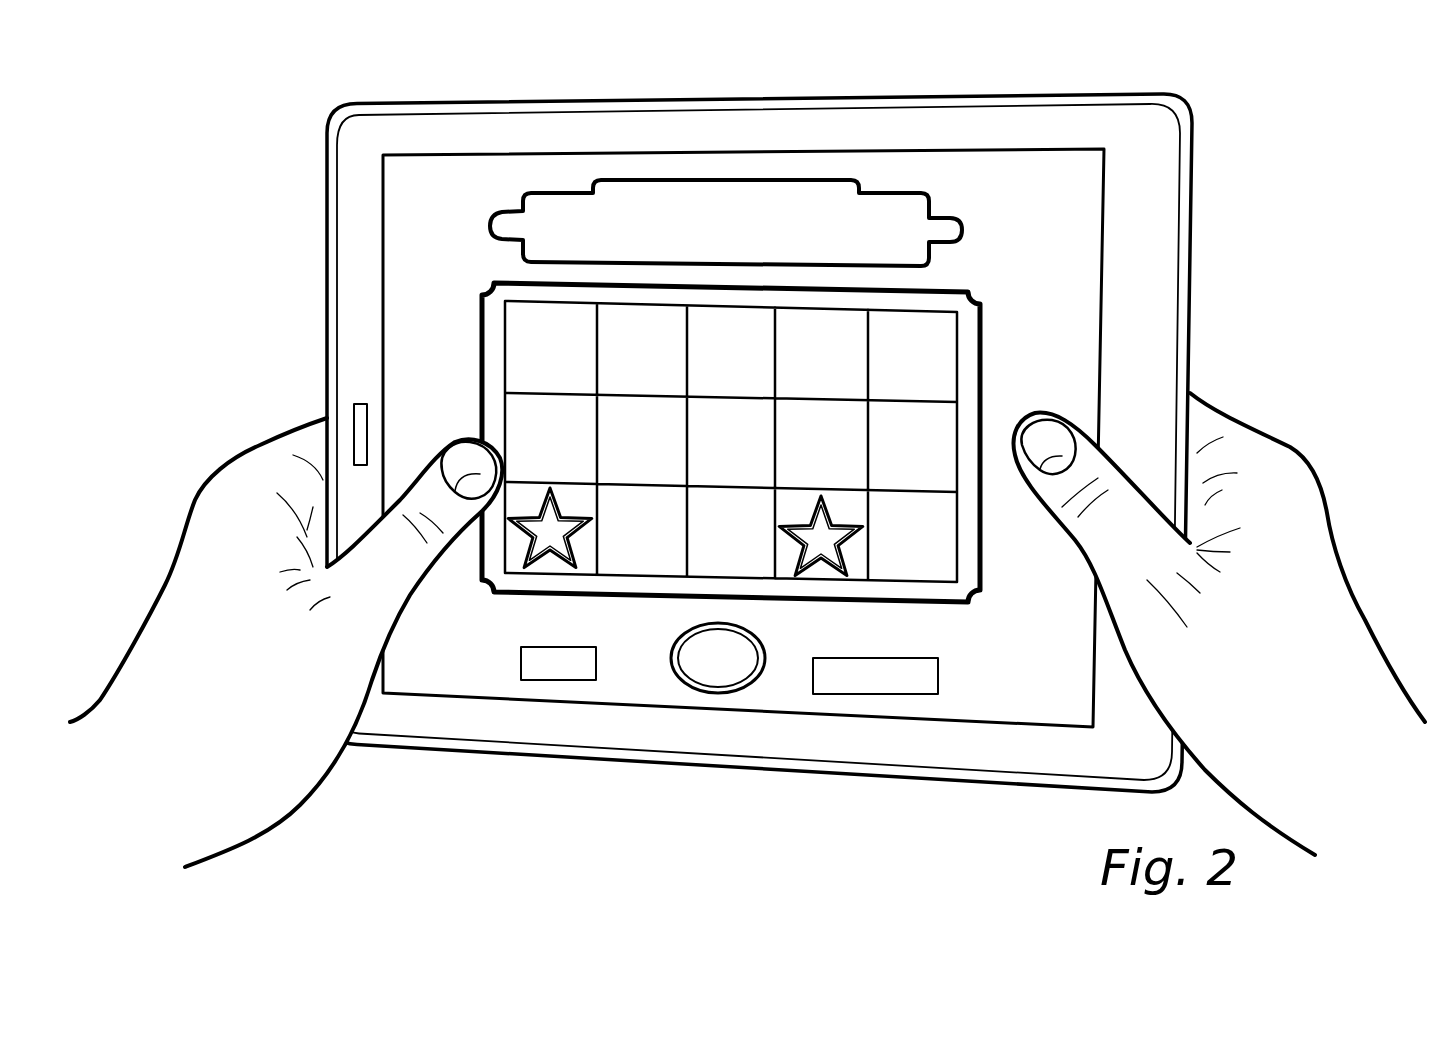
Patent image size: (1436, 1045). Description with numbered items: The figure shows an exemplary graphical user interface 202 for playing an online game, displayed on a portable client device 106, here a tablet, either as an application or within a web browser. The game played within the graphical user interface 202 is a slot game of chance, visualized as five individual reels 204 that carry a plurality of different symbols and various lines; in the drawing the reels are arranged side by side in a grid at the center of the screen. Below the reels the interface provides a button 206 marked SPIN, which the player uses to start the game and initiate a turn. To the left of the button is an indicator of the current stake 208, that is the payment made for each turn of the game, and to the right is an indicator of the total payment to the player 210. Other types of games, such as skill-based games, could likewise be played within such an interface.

The portable client device 106 is at (1193, 132).
The graphical user interface 202 is at (1048, 192).
The reels 204 is at (975, 430).
The button 206 is at (720, 693).
The indicator of the current stake 208 is at (566, 682).
The indicator of the total payment to the player 210 is at (893, 695).